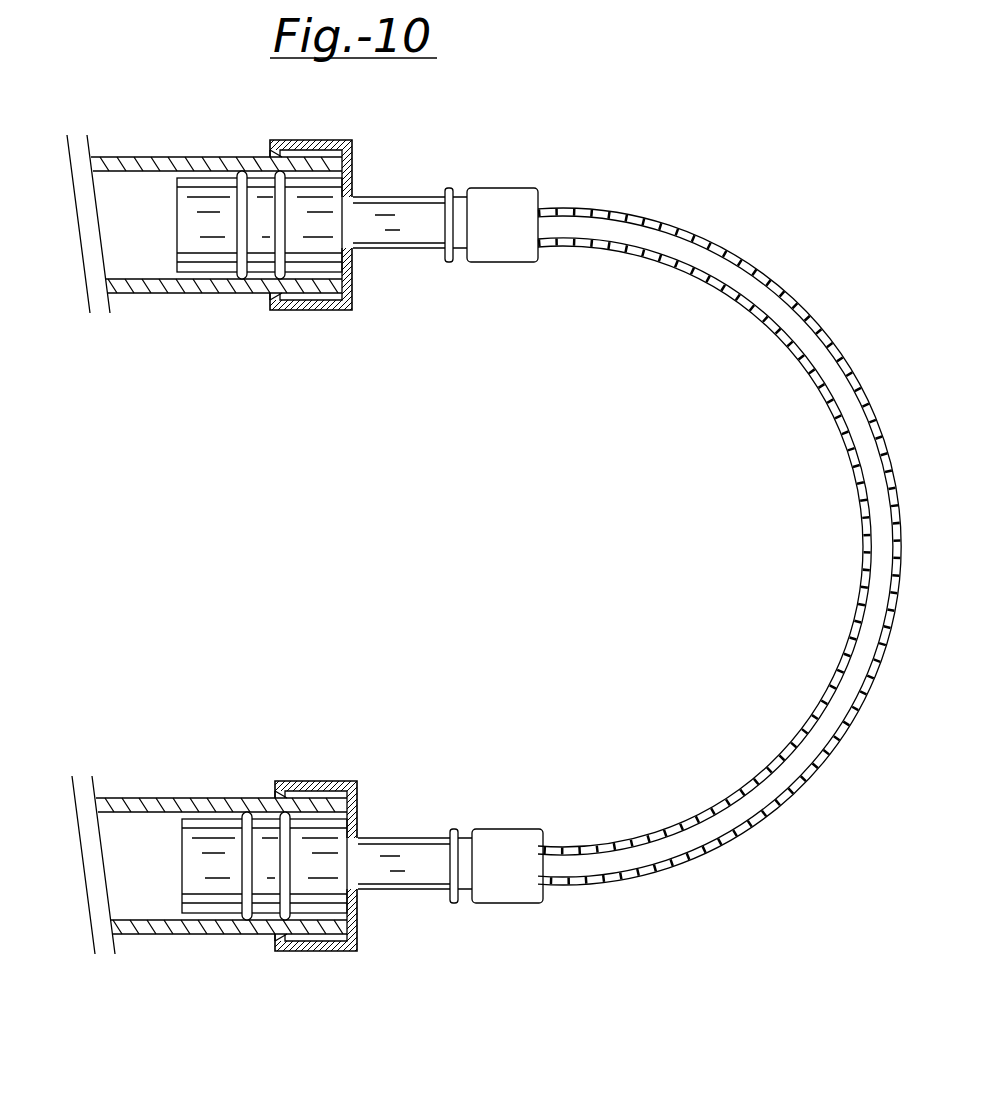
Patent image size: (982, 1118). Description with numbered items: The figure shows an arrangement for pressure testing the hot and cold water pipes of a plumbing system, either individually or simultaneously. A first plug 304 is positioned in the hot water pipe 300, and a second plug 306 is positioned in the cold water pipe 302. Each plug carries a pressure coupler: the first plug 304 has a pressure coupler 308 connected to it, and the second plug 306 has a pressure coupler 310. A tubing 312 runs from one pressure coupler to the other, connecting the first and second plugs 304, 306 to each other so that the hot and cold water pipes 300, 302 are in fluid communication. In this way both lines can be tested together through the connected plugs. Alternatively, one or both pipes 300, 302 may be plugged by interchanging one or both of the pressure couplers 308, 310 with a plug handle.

The hot water pipe 300 is at (138, 157).
The cold water pipe 302 is at (137, 799).
The first plug 304 is at (262, 182).
The second plug 306 is at (267, 822).
The pressure coupler 308 is at (503, 188).
The pressure coupler 310 is at (503, 830).
The tubing 312 is at (755, 287).